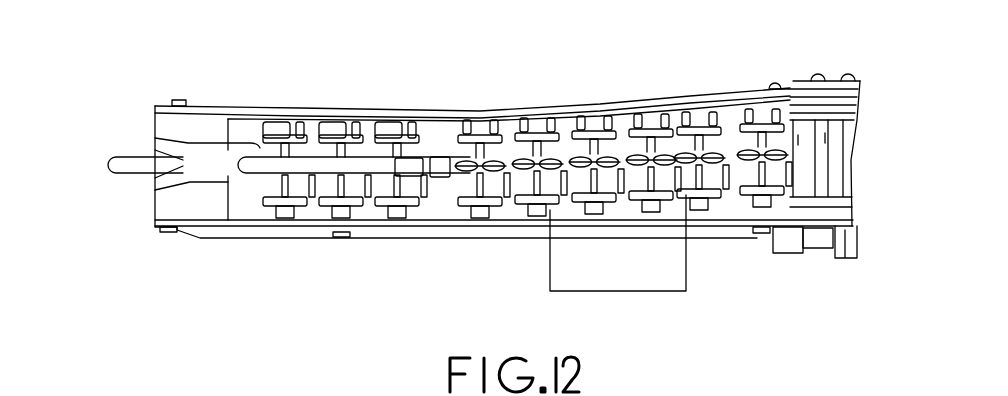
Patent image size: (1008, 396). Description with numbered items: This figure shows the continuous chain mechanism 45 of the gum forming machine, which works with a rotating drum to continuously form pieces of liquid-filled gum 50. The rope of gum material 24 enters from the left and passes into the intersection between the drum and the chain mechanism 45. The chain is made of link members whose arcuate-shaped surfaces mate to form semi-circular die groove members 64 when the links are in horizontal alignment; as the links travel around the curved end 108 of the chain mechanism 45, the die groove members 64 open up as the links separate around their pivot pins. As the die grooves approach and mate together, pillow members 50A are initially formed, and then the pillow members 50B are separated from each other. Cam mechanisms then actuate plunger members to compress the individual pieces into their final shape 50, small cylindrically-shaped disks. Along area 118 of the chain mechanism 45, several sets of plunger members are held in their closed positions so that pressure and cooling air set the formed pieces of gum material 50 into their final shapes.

The rope of gum material 24 is at (122, 157).
The curved end 108 is at (193, 152).
The pillow members 50A is at (437, 157).
The pillow members 50B is at (468, 160).
The continuous chain mechanism 45 is at (692, 95).
The pieces of liquid-filled gum 50 is at (783, 148).
The die groove members 64 is at (332, 194).
The area of the chain mechanism 118 is at (630, 291).